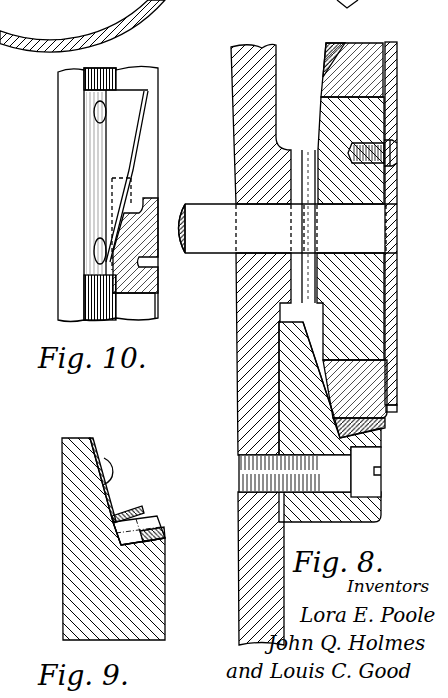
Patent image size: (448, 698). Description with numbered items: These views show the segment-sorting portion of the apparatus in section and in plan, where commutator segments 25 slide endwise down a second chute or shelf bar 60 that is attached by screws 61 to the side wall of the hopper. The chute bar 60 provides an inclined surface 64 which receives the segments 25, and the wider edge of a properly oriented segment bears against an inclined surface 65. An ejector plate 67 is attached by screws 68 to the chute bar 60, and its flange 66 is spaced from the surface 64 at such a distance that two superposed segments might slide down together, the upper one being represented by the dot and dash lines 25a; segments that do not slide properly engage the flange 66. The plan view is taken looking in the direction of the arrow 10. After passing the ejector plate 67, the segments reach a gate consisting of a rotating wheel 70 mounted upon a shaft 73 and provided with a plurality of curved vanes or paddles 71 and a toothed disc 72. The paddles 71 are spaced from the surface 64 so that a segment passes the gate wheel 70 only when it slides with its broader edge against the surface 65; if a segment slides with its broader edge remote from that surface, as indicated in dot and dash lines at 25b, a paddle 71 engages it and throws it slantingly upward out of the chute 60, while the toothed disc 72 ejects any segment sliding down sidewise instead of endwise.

In FIG. 9, the arrow 10 is at (127, 439).
In FIG. 10, the commutator segment 25 is at (128, 208).
In FIG. 9, the commutator segment 25 is at (133, 545).
In FIG. 8, the commutator segment 25 is at (381, 425).
In FIG. 9, the upper segment 25a is at (151, 519).
In FIG. 8, the misoriented segment 25b is at (376, 410).
In FIG. 10, the chute bar 60 is at (153, 298).
In FIG. 9, the chute bar 60 is at (150, 603).
In FIG. 8, the chute bar 60 is at (381, 507).
In FIG. 8, the screw 61 is at (372, 487).
In FIG. 9, the inclined surface 64 is at (133, 555).
In FIG. 8, the inclined surface 64 is at (357, 428).
In FIG. 9, the inclined surface 65 is at (112, 529).
In FIG. 8, the inclined surface 65 is at (330, 358).
In FIG. 10, the flange 66 is at (144, 118).
In FIG. 9, the flange 66 is at (136, 508).
In FIG. 10, the ejector plate 67 is at (87, 157).
In FIG. 9, the ejector plate 67 is at (90, 438).
In FIG. 10, the screw 68 is at (96, 112).
In FIG. 9, the screw 68 is at (108, 462).
In FIG. 8, the gate wheel 70 is at (330, 118).
In FIG. 8, the paddle 71 is at (326, 52).
In FIG. 8, the toothed disc 72 is at (393, 115).
In FIG. 8, the shaft 73 is at (390, 221).